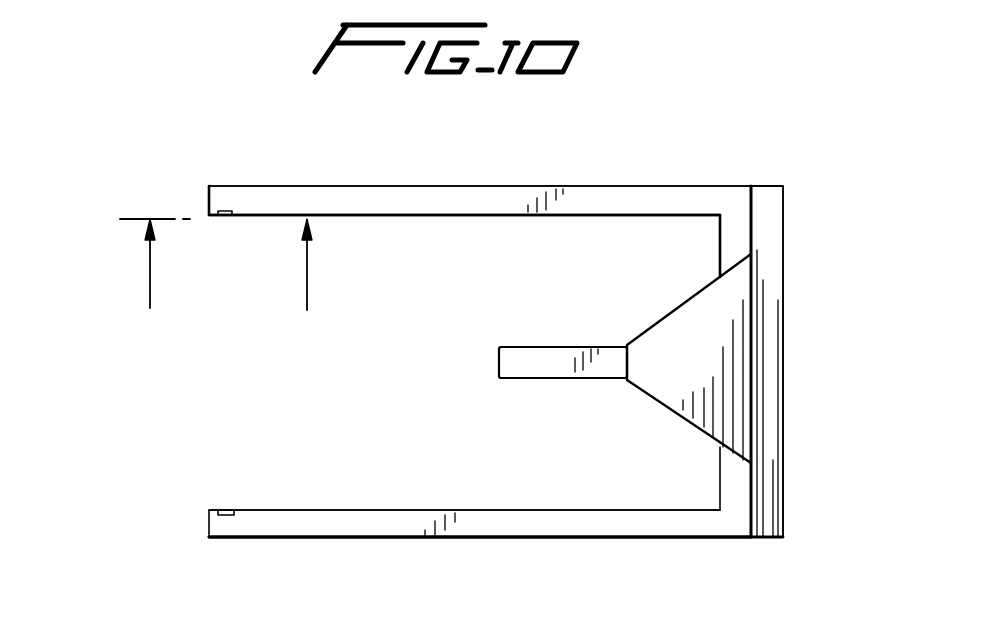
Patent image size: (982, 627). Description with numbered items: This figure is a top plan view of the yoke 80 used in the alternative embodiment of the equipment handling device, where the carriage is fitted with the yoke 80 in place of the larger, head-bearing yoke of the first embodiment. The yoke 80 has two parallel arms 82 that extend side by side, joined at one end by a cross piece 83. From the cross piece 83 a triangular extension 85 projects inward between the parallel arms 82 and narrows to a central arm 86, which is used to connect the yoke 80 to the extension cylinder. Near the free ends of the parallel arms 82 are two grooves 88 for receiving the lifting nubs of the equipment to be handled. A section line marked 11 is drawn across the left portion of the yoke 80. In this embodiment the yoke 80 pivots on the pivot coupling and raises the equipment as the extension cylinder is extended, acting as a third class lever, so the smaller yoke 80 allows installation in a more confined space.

The yoke 80 is at (725, 166).
The parallel arms 82 is at (490, 195).
The cross piece 83 is at (768, 300).
The triangular extension 85 is at (680, 387).
The central arm 86 is at (500, 362).
The grooves 88 is at (225, 219).
The section line 11- 11 is at (235, 265).